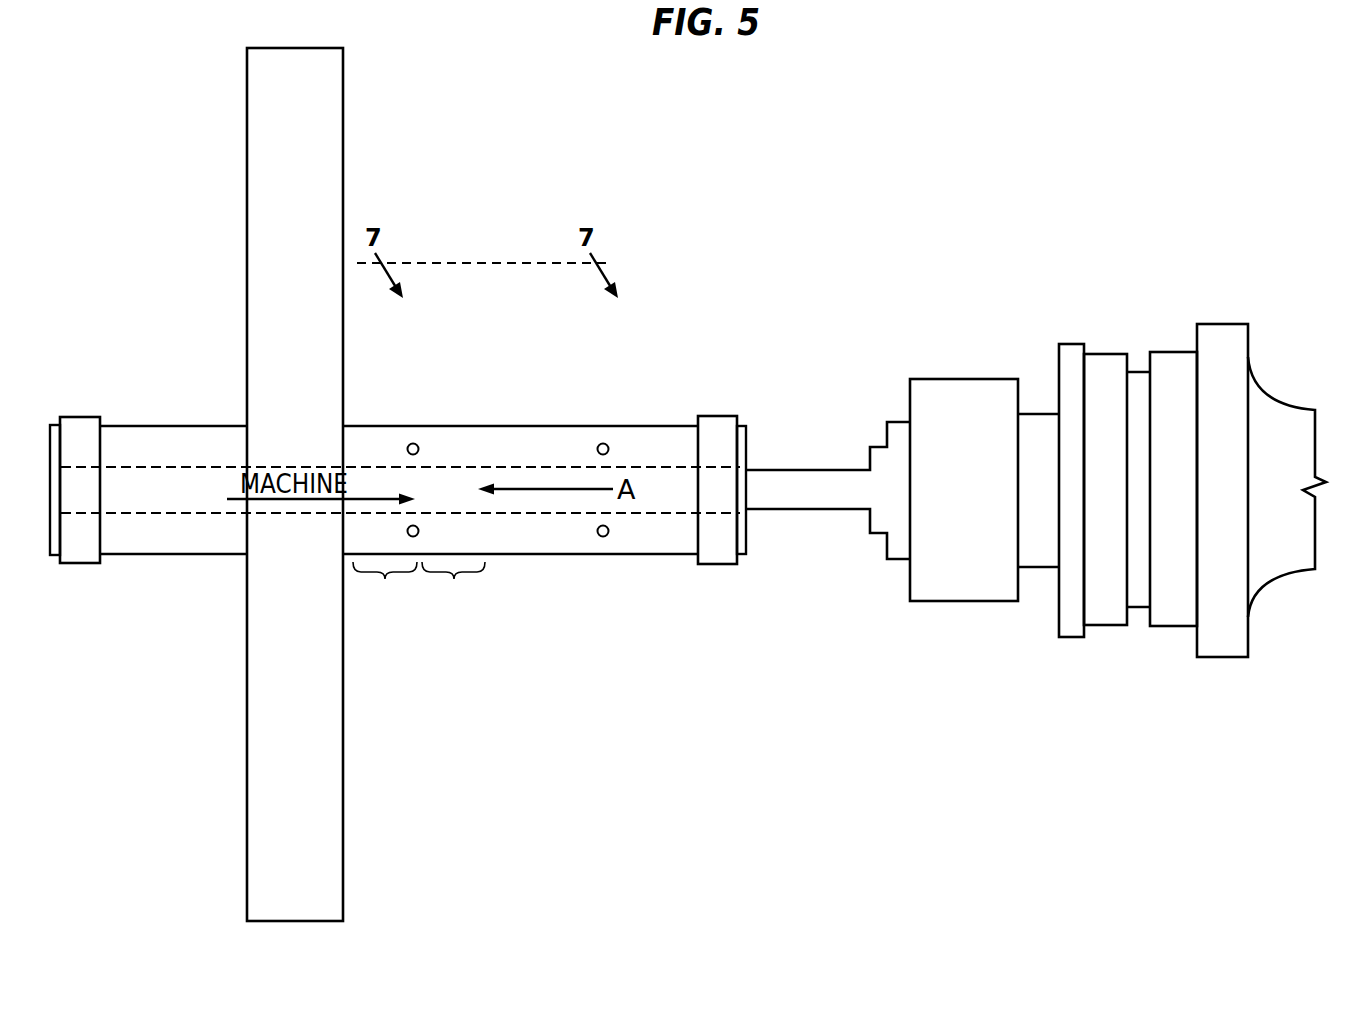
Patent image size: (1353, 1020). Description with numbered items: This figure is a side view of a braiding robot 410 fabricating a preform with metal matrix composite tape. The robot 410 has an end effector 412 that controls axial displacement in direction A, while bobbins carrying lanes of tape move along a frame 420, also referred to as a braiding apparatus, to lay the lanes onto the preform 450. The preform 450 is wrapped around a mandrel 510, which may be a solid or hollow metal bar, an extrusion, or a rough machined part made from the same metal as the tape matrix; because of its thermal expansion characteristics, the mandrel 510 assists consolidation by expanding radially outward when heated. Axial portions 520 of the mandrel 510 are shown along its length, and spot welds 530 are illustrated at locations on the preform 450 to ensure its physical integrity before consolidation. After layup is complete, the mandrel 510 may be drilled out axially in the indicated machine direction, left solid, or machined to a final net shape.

The robot 410 is at (1283, 397).
The end effector 412 is at (970, 379).
The frame 420 is at (247, 214).
The preform 450 is at (497, 426).
The mandrel 510 is at (746, 527).
The axial portions 520 is at (419, 582).
The spot welds 530 is at (604, 444).